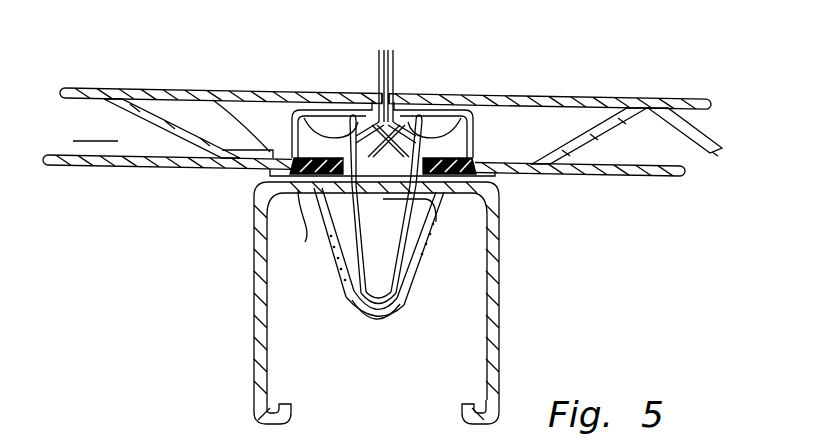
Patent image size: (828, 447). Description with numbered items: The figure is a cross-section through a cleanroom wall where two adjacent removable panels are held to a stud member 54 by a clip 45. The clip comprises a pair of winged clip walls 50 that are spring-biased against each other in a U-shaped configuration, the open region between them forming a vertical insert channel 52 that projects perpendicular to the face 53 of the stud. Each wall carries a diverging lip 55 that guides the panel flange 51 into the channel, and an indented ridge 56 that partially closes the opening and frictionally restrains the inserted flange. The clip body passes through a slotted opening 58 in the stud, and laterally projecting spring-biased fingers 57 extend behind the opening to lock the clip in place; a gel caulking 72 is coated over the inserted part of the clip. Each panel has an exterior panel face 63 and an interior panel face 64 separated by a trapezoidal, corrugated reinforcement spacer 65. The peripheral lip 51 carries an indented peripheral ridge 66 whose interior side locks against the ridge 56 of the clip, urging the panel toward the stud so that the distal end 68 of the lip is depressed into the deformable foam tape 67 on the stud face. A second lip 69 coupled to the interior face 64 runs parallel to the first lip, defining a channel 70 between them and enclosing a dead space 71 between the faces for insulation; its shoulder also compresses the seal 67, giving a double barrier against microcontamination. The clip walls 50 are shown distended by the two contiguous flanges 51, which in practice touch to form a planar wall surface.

The clip 45 is at (386, 318).
The clip walls 50 is at (291, 135).
The panel flange 51 is at (388, 92).
The vertical insert channel 52 is at (383, 228).
The stud face 53 is at (262, 212).
The stud member 54 is at (261, 246).
The diverging lips 55 is at (404, 100).
The indented ridge 56 is at (352, 110).
The spring-biased fingers 57 is at (331, 255).
The slotted opening 58 is at (305, 234).
The exterior panel face 63 is at (146, 86).
The interior panel face 64 is at (178, 167).
The interior reinforcement spacer 65 is at (718, 148).
The indented peripheral ridge 66 is at (331, 112).
The foam tape 67 is at (475, 137).
The distal end of panel lip 68 is at (425, 222).
The second lip 69 is at (223, 92).
The channel 70 is at (296, 132).
The dead space 71 is at (95, 132).
The gel caulking 72 is at (412, 272).